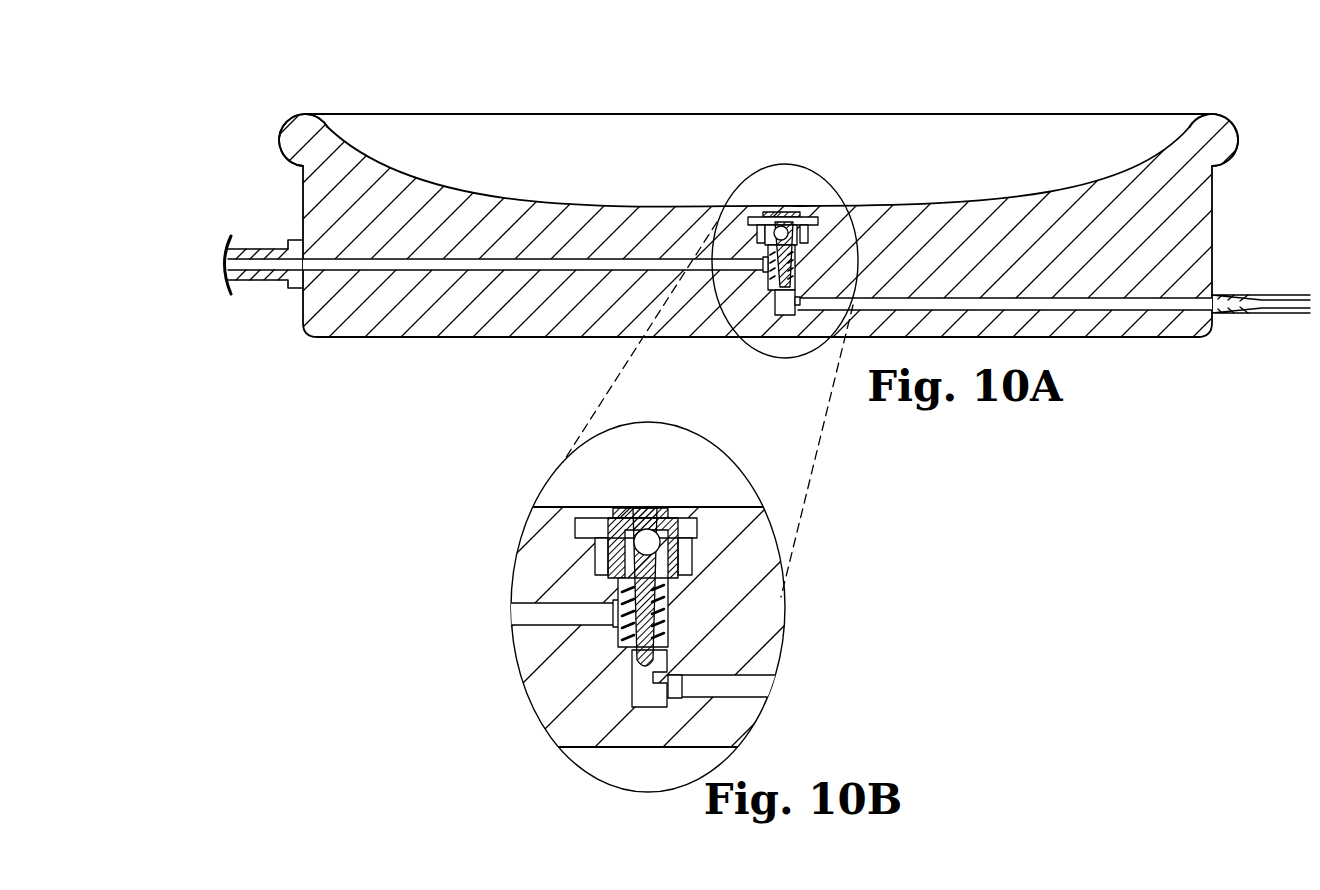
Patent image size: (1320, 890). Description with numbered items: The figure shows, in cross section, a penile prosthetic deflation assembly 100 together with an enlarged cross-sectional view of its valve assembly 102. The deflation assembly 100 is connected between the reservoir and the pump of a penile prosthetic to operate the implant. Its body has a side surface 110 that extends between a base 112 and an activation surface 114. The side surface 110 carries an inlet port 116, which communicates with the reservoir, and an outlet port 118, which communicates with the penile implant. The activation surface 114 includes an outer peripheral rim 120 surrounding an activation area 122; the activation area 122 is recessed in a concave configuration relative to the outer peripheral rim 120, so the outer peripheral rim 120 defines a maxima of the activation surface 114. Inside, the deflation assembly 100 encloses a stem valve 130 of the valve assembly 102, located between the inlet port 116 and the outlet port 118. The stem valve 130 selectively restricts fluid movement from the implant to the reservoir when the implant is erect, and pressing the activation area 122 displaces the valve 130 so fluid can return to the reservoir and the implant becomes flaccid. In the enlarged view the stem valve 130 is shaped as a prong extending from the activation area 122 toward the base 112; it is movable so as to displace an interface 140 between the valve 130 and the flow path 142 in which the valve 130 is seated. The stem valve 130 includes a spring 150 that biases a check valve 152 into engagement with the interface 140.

In FIG. 10A, the penile prosthetic deflation assembly 100 is at (1006, 79).
In FIG. 10A, the valve assembly 102 is at (810, 207).
In FIG. 10B, the valve assembly 102 is at (647, 585).
In FIG. 10A, the side surface 110 is at (303, 202).
In FIG. 10A, the base 112 is at (407, 338).
In FIG. 10A, the activation surface 114 is at (434, 96).
In FIG. 10A, the inlet port 116 is at (1230, 316).
In FIG. 10A, the outlet port 118 is at (262, 284).
In FIG. 10A, the outer peripheral rim 120 is at (305, 114).
In FIG. 10A, the activation area 122 is at (570, 114).
In FIG. 10B, the activation area 122 is at (577, 507).
In FIG. 10A, the stem valve 130 is at (800, 217).
In FIG. 10B, the stem valve 130 is at (648, 538).
In FIG. 10B, the interface 140 is at (631, 650).
In FIG. 10B, the flow path 142 is at (571, 628).
In FIG. 10B, the spring 150 is at (670, 604).
In FIG. 10B, the check valve 152 is at (668, 650).